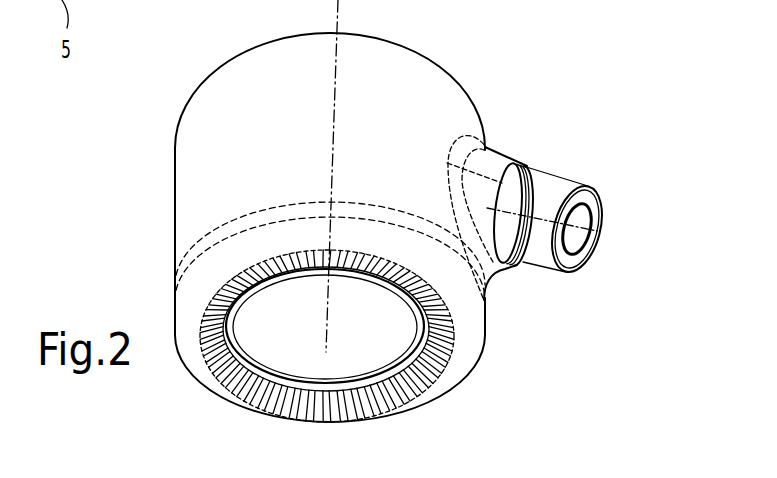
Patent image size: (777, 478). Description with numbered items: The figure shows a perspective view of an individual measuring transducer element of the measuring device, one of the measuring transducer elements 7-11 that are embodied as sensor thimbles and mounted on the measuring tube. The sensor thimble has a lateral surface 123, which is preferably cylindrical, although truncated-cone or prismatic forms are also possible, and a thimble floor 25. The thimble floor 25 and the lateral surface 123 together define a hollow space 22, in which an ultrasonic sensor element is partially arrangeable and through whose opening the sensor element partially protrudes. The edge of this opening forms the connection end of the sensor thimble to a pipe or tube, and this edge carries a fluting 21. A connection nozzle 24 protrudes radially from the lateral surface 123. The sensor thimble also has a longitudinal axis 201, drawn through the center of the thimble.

The fluting 21 is at (443, 384).
The hollow space 22 is at (373, 321).
The connection nozzle 24 is at (553, 172).
The thimble floor 25 is at (333, 377).
The lateral surface 123 is at (197, 197).
The longitudinal axis 201 is at (338, 22).
The measuring transducer elements 7-11 is at (606, 358).